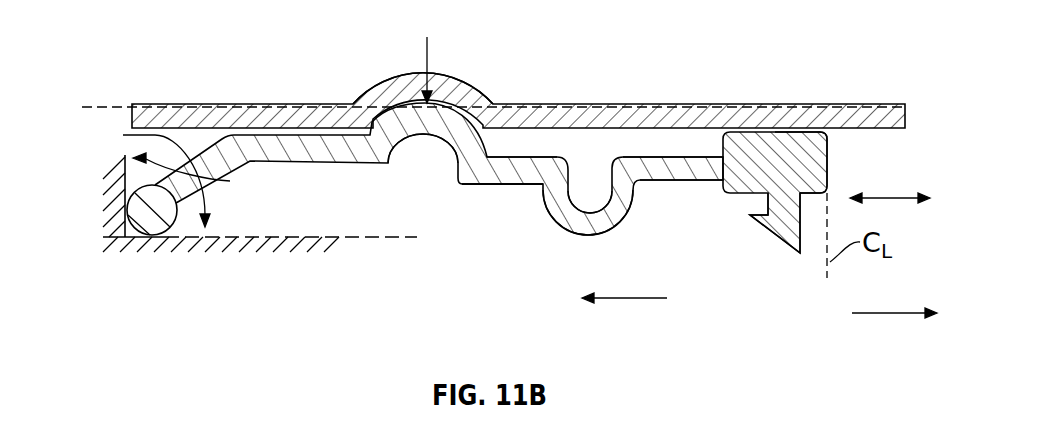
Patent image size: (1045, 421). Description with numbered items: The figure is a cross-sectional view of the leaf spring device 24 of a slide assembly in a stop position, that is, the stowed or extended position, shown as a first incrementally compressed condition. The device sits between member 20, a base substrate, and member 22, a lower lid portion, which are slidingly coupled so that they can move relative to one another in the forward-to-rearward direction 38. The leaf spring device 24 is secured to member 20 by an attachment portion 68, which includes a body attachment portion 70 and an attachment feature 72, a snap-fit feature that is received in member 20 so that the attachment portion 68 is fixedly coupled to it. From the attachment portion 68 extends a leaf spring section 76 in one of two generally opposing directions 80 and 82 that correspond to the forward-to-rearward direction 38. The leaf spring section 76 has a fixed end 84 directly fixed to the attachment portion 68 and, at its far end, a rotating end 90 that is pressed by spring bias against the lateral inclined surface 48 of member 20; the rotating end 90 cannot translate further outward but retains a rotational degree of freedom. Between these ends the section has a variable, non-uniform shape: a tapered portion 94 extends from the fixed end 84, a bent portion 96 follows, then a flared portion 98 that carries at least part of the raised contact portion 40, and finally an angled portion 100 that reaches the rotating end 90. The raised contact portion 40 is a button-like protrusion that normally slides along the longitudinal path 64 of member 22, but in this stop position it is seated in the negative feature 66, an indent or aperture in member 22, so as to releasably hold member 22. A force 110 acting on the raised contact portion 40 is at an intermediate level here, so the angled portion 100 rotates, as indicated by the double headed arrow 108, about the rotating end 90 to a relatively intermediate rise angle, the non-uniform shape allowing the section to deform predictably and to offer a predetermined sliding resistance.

The member 20 is at (92, 216).
The member 22 is at (227, 104).
The leaf spring device 24 is at (852, 36).
The forward-to-rearward direction 38 is at (890, 199).
The raised contact portion 40 is at (435, 124).
The lateral inclined surface 48 is at (365, 236).
The longitudinal path 64 is at (603, 130).
The negative feature 66 is at (470, 84).
The attachment portion 68 is at (783, 138).
The body attachment portion 70 is at (803, 160).
The attachment feature 72 is at (783, 227).
The leaf spring section 76 is at (530, 187).
The opposing direction 80 is at (622, 299).
The opposing direction 82 is at (893, 314).
The fixed end 84 is at (677, 162).
The rotating end 90 is at (147, 228).
The tapered portion 94 is at (672, 181).
The bent portion 96 is at (590, 236).
The flared portion 98 is at (500, 184).
The angled portion 100 is at (145, 174).
The rotation of angled portion 108 is at (203, 175).
The force 110 is at (428, 58).